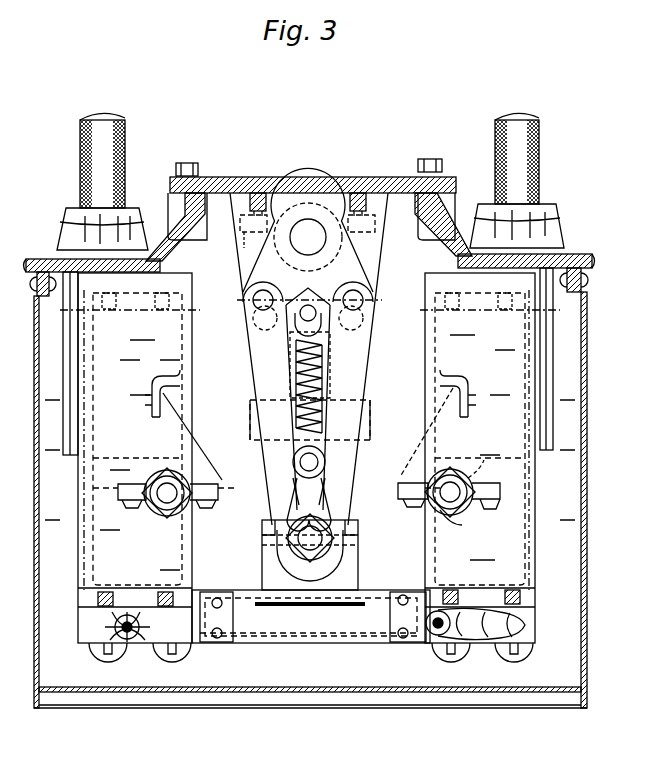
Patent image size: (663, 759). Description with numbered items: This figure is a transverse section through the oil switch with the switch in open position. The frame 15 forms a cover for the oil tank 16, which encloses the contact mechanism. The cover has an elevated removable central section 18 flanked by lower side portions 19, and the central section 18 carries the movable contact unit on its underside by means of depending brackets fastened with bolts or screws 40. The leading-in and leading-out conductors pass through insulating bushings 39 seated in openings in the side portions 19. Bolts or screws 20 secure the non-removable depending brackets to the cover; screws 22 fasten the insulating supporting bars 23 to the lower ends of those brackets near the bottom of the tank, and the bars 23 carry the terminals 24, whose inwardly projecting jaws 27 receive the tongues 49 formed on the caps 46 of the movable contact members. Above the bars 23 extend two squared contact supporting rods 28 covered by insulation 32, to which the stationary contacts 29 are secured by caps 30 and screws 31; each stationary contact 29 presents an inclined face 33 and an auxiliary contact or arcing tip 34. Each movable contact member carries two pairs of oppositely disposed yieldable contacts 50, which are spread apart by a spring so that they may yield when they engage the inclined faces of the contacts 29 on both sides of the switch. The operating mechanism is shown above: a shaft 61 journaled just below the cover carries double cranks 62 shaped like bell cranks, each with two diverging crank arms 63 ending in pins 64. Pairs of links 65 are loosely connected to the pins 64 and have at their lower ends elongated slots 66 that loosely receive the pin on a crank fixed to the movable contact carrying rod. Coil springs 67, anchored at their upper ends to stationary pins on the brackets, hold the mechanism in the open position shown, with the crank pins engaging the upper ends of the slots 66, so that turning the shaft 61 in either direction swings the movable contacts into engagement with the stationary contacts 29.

The frame 15 is at (455, 208).
The oil tank 16 is at (586, 440).
The central section 18 is at (232, 178).
The side portions 19 is at (45, 261).
The bolts or screws 20 is at (110, 308).
The screws 22 is at (98, 645).
The insulating supporting bars 23 is at (138, 636).
The terminals 24 is at (412, 600).
The jaws 27 is at (358, 640).
The contact supporting rods 28 is at (160, 502).
The stationary contacts 29 is at (222, 480).
The caps 30 is at (462, 525).
The screws 31 is at (494, 508).
The insulation 32 is at (468, 472).
The inclined face 33 is at (196, 452).
The auxiliary contact or arcing tip 34 is at (466, 380).
The insulating bushings 39 is at (556, 236).
The bolts or screws 40 is at (248, 244).
The cap 46 is at (265, 545).
The tongues 49 is at (352, 578).
The yieldable contacts 50 is at (370, 430).
The shaft 61 is at (310, 222).
The double cranks 62 is at (300, 210).
The crank arms 63 is at (258, 266).
The pins 64 is at (253, 299).
The links 65 is at (260, 343).
The elongated slots 66 is at (330, 502).
The coil springs 67 is at (322, 386).